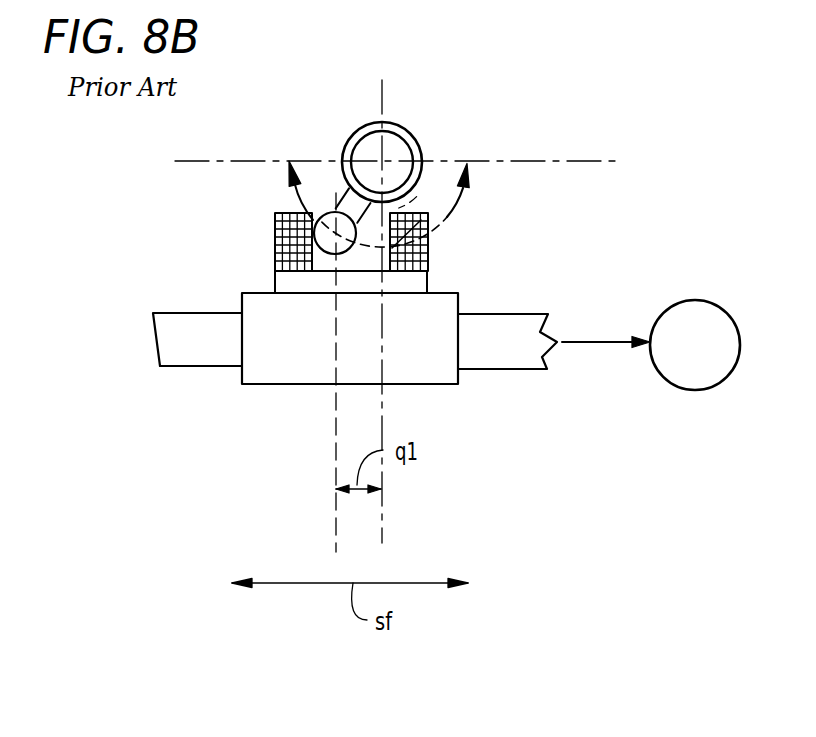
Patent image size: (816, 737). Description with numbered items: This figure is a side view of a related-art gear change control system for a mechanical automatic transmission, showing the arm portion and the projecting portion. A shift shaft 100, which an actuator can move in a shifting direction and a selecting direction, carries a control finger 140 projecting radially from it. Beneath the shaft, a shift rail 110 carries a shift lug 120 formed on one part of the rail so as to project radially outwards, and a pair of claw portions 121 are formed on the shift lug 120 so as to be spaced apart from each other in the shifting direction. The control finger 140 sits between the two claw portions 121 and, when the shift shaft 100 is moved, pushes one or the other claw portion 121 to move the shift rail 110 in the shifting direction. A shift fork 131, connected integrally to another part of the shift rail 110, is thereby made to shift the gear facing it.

The shift shaft 100 is at (340, 160).
The control finger 140 is at (313, 224).
The claw portions 121 is at (277, 246).
The shift lug 120 is at (305, 285).
The shift rail 110 is at (488, 360).
The shift fork 131 is at (651, 345).